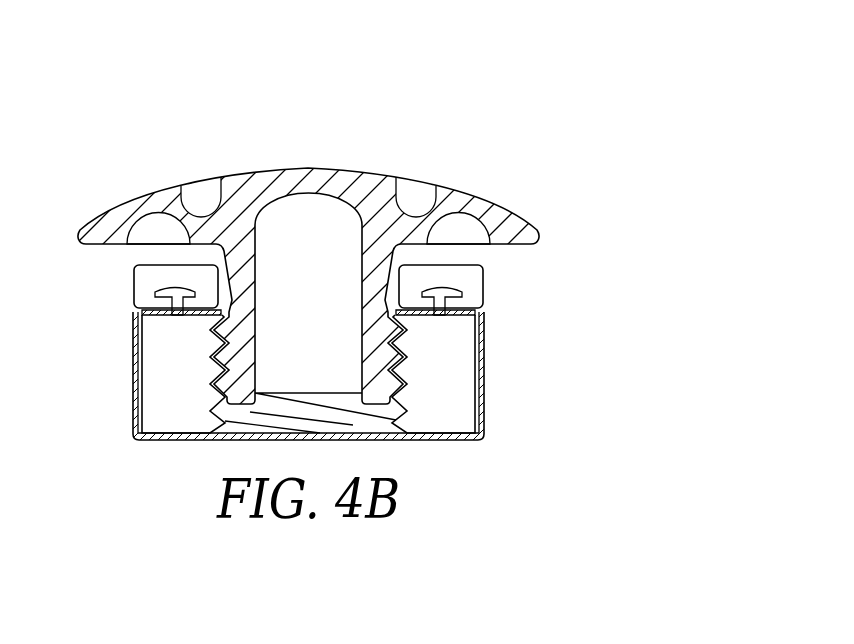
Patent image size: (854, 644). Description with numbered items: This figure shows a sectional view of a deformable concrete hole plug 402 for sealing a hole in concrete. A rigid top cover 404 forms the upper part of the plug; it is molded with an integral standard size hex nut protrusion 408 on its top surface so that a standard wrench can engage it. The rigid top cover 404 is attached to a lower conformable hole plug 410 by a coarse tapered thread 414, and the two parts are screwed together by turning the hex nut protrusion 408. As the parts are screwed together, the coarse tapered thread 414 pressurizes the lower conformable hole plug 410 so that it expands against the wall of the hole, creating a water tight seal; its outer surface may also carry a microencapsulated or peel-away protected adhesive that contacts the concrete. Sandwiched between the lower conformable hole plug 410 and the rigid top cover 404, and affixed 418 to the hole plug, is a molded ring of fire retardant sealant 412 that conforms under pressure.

The deformable concrete hole plug 402 is at (648, 90).
The rigid top cover 404 is at (296, 275).
The hex nut protrusion 408 is at (304, 168).
The lower conformable hole plug 410 is at (485, 380).
The molded ring of fire retardant sealant 412 is at (138, 288).
The coarse tapered thread 414 is at (217, 365).
The affixing of the sealant ring 418 is at (462, 290).